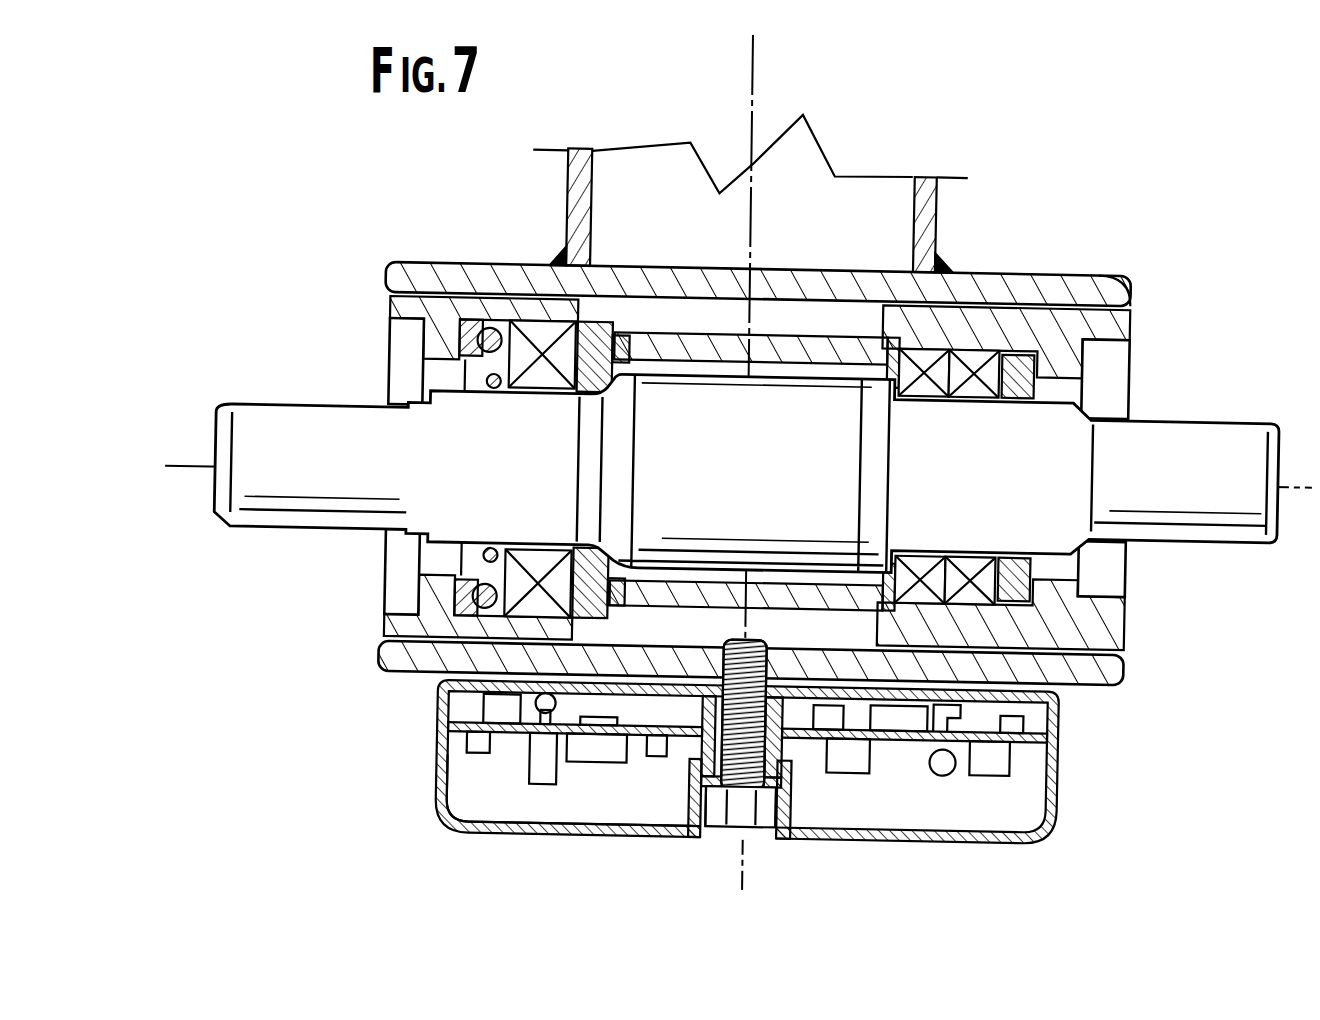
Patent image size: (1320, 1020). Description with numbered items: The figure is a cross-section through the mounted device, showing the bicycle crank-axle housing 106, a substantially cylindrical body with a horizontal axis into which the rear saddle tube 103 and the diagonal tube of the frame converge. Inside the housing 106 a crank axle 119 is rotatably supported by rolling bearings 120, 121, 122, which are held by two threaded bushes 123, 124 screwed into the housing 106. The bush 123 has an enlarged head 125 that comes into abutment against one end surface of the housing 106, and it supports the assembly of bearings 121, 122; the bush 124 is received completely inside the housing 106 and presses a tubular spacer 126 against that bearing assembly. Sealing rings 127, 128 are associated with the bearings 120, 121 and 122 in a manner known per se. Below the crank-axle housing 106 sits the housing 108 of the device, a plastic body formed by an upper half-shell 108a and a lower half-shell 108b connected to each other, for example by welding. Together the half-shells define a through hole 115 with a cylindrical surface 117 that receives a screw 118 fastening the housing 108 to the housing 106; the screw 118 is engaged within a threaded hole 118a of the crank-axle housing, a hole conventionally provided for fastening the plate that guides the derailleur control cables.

The rear saddle tube 103 is at (932, 201).
The housing for the bicycle crank axle 106 is at (1089, 266).
The housing 108 is at (1073, 784).
The upper half-shell 108a is at (442, 730).
The lower half-shell 108b is at (443, 779).
The through hole 115 is at (758, 792).
The cylindrical surface 117 is at (706, 758).
The screw 118 is at (719, 816).
The threaded hole 118a is at (742, 805).
The crank axle 119 is at (1186, 411).
The rolling bearing 120 is at (534, 347).
The rolling bearing 121 is at (928, 351).
The rolling bearing 122 is at (971, 353).
The threaded bush 123 is at (1090, 333).
The threaded bush 124 is at (397, 328).
The enlarged head 125 is at (1112, 280).
The tubular spacer 126 is at (677, 344).
The sealing ring 127 is at (432, 607).
The sealing ring 128 is at (1079, 590).